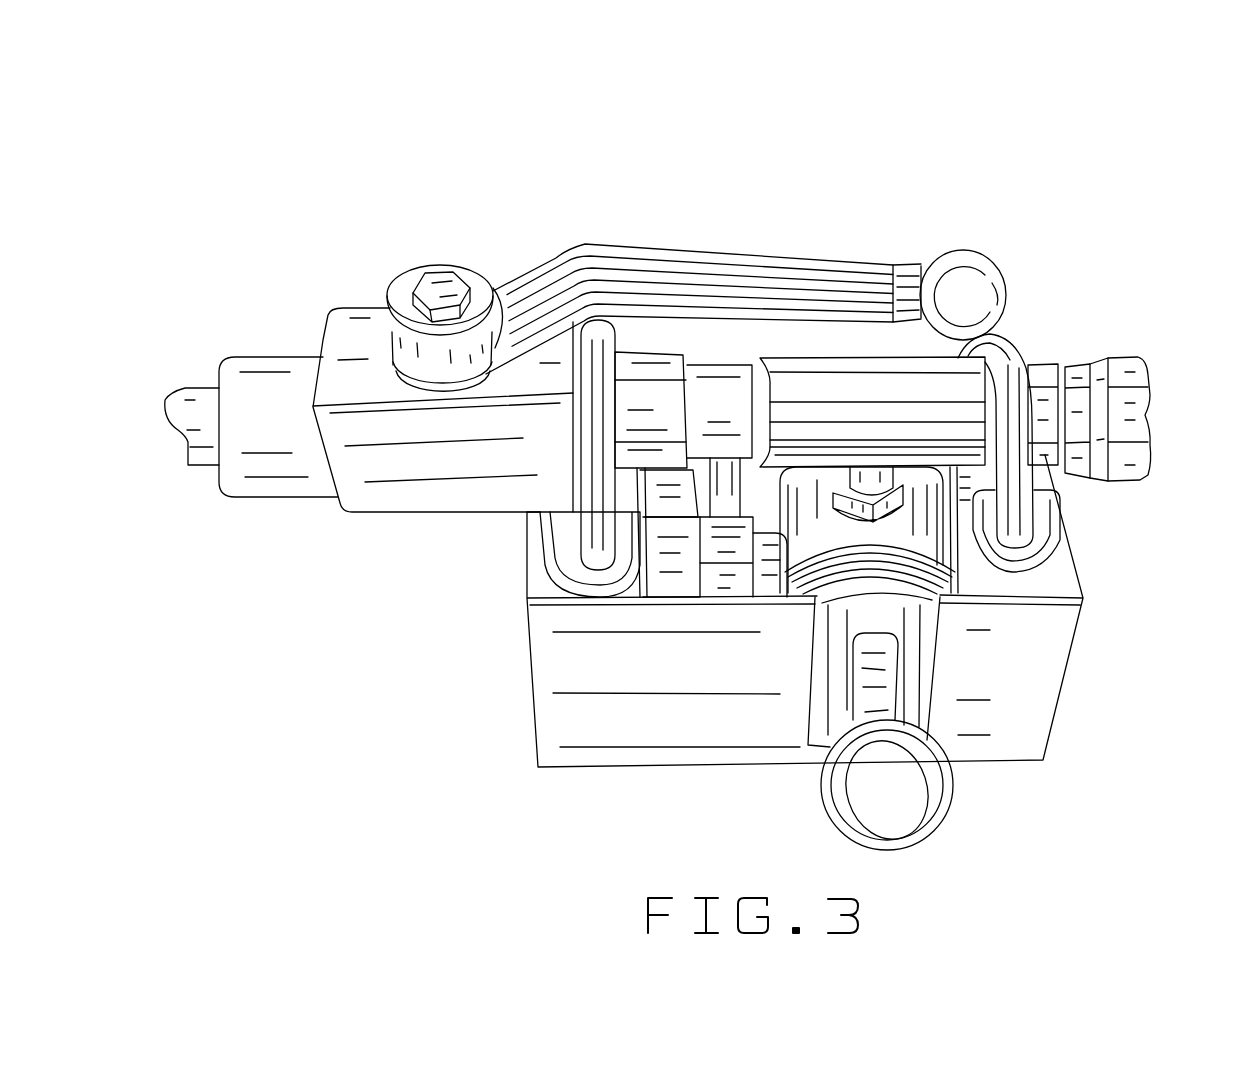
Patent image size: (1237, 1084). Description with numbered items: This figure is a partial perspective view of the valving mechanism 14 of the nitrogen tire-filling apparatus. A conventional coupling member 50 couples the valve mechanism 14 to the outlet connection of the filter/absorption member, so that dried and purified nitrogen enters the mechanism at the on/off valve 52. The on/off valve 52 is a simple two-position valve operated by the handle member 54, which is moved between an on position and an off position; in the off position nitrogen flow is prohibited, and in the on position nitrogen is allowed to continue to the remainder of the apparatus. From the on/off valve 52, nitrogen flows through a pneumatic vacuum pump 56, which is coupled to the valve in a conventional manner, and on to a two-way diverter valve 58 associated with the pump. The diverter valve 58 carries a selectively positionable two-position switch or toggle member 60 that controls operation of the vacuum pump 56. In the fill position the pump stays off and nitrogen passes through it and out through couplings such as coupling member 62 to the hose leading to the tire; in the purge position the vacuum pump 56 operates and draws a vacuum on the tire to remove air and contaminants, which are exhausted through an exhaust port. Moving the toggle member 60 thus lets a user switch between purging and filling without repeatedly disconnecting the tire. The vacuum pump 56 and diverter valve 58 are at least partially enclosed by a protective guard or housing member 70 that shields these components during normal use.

The valving mechanism 14 is at (721, 126).
The coupling member 50 is at (262, 357).
The on/off valve 52 is at (394, 522).
The handle member 54 is at (691, 253).
The pneumatic vacuum pump 56 is at (876, 356).
The two-way diverter valve 58 is at (927, 547).
The toggle member 60 is at (950, 810).
The coupling member 62 is at (1123, 362).
The protective guard or housing member 70 is at (540, 723).